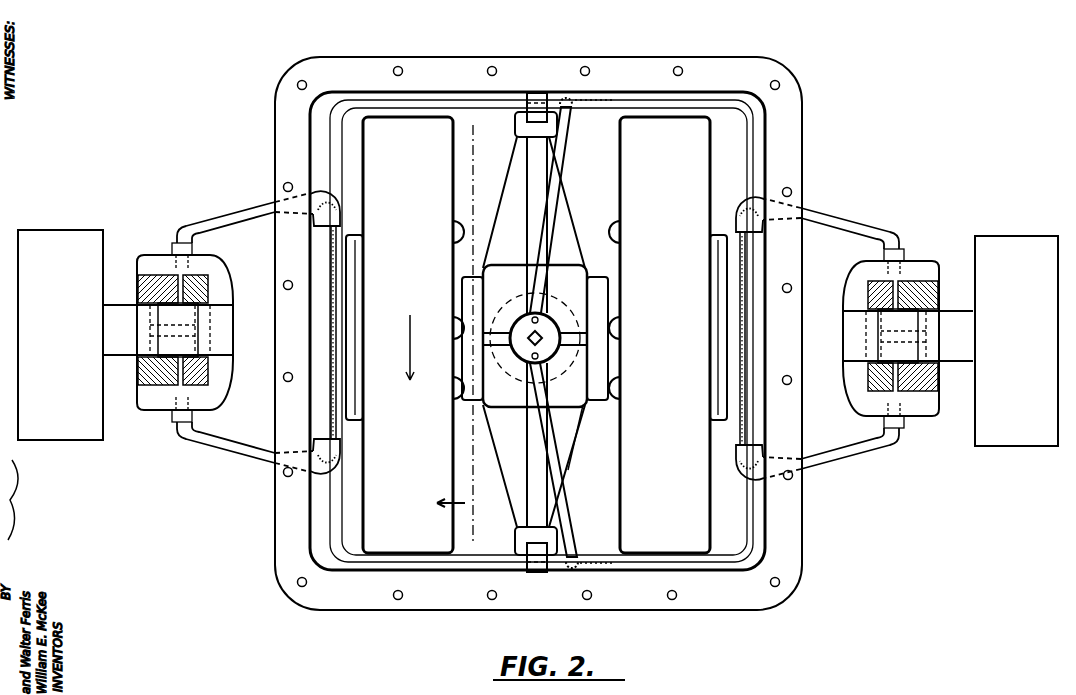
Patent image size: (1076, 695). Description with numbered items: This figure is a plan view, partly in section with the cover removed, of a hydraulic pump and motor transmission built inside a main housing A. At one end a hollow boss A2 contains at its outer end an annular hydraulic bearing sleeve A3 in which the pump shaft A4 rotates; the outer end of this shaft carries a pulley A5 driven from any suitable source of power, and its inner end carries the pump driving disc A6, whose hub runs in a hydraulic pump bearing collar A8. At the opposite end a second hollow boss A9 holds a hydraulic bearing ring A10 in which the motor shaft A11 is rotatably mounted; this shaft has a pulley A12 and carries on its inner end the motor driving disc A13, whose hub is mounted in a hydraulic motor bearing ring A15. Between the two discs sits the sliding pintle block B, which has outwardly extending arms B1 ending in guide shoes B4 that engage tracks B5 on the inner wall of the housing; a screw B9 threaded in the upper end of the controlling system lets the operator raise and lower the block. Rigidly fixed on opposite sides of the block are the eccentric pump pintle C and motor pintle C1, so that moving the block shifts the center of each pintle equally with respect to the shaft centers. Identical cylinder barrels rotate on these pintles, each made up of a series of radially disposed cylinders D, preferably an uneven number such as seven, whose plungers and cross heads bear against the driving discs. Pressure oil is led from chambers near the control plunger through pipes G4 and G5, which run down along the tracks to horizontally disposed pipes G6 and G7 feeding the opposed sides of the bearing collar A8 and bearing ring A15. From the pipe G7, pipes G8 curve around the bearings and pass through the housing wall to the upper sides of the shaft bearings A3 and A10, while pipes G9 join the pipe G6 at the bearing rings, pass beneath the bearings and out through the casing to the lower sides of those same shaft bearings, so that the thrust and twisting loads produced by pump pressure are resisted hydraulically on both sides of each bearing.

The main housing A is at (737, 77).
The hollow boss A2 is at (157, 245).
The annular hydraulic bearing sleeve A3 is at (210, 298).
The pump shaft A4 is at (133, 358).
The pulley A5 is at (60, 335).
The pump driving disc A6 is at (400, 199).
The hydraulic pump bearing collar A8 is at (355, 265).
The hollow boss A9 is at (830, 262).
The hydraulic bearing ring A10 is at (868, 304).
The motor shaft A11 is at (963, 362).
The pulley A12 is at (1016, 341).
The motor driving disc A13 is at (665, 218).
The hydraulic motor bearing ring A15 is at (716, 300).
The sliding pintle block B is at (535, 336).
The outwardly extending arm B1 is at (490, 250).
The guide shoe B4 is at (535, 112).
The track B5 is at (548, 100).
The screw B9 is at (532, 334).
The pump pintle C is at (450, 336).
The motor pintle C1 is at (598, 412).
The pump or motor cylinder D is at (617, 257).
The pipe G4 is at (562, 155).
The pipe G5 is at (570, 505).
The horizontally disposed pipe G6 is at (430, 108).
The horizontally disposed pipe G7 is at (330, 515).
The pipe G8 is at (284, 212).
The pipe G9 is at (240, 455).